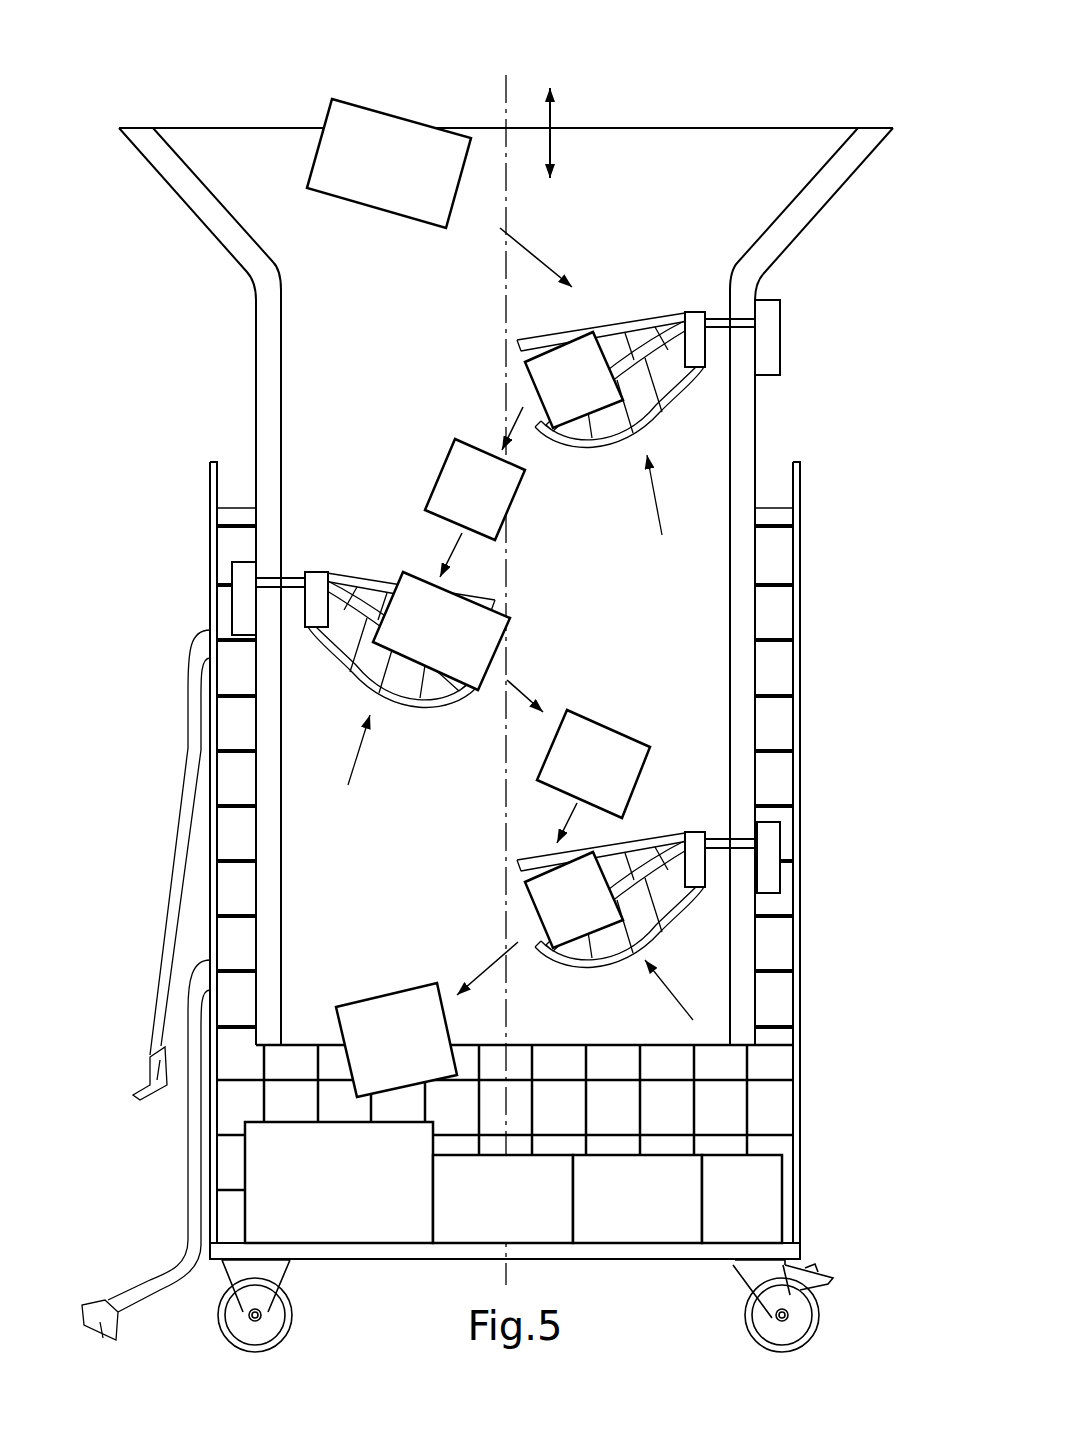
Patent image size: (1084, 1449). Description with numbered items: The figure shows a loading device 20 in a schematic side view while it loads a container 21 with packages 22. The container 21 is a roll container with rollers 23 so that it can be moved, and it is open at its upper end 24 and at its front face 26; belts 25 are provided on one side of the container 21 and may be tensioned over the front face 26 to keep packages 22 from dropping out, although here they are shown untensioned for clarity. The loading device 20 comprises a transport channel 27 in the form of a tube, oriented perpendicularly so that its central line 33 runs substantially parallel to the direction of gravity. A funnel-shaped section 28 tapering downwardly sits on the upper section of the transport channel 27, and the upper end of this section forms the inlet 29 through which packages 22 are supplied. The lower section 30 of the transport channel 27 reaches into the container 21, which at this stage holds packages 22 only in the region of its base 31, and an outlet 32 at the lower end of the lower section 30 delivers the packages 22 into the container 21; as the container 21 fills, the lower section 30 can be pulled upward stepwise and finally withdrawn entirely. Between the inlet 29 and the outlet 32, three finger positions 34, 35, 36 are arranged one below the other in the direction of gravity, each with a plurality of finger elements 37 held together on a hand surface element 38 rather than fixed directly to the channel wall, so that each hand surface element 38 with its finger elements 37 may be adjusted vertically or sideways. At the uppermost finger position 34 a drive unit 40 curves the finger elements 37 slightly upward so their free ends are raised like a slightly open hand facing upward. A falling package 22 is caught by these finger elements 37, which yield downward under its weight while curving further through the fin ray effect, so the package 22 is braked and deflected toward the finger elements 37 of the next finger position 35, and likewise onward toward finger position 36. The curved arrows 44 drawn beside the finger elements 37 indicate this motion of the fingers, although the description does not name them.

The loading device 20 is at (228, 70).
The container 21 is at (800, 633).
The packages 22 is at (398, 148).
The rollers 23 is at (270, 1320).
The upper end 24 is at (238, 458).
The belts 25 is at (159, 1023).
The front face 26 is at (770, 1057).
The transport channel 27 is at (698, 482).
The funnel-shaped section 28 is at (840, 188).
The inlet 29 is at (688, 127).
The lower section 30 is at (745, 960).
The base 31 is at (380, 1250).
The outlet 32 is at (597, 1045).
The central line 33 is at (507, 88).
The finger position 34 is at (825, 255).
The finger position 35 is at (175, 490).
The finger position 36 is at (822, 720).
The finger elements 37 is at (610, 328).
The hand surface element 38 is at (692, 330).
The drive unit 40 is at (770, 342).
The rotation direction 44 is at (518, 750).